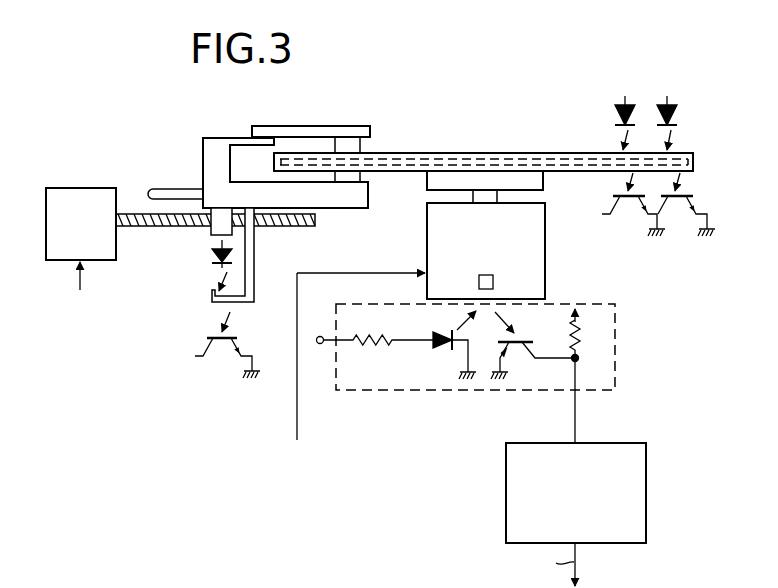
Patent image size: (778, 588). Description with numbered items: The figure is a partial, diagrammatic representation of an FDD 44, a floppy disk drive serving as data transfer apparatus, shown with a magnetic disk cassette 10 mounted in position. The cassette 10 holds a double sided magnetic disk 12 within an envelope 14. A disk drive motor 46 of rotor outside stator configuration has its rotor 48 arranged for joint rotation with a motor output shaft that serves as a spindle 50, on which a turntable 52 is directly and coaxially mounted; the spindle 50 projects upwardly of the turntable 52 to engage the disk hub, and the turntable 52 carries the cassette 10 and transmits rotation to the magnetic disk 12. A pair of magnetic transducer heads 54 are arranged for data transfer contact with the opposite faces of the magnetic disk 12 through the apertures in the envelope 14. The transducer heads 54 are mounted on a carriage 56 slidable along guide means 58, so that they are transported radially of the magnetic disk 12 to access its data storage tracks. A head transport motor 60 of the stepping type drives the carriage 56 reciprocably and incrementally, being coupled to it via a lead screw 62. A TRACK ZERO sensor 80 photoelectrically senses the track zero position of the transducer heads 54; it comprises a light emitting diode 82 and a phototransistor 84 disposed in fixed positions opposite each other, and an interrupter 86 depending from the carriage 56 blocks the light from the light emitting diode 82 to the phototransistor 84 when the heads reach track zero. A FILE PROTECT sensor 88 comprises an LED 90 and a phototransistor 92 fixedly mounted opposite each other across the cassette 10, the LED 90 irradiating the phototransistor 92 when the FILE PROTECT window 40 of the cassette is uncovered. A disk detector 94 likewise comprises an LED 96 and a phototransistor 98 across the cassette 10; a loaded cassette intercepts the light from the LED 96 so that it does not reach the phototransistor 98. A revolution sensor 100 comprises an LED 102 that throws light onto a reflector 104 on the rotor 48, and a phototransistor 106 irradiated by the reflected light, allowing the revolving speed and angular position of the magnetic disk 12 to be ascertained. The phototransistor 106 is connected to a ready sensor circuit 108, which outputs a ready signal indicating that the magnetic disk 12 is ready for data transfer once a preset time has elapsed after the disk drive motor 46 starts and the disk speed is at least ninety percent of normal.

The magnetic disk cassette 10 is at (483, 135).
The magnetic disk 12 is at (519, 158).
The envelope 14 is at (439, 152).
The FILE PROTECT window 40 is at (645, 155).
The FDD 44 is at (124, 149).
The disk drive motor 46 is at (512, 251).
The rotor 48 is at (538, 250).
The spindle 50 is at (485, 204).
The turntable 52 is at (544, 181).
The magnetic transducer heads 54 is at (353, 151).
The carriage 56 is at (352, 207).
The guide means 58 is at (167, 188).
The head transport motor 60 is at (72, 197).
The lead screw 62 is at (143, 227).
The TRACK ZERO sensor 80 is at (221, 271).
The light emitting diode 82 is at (210, 256).
The phototransistor 84 is at (212, 336).
The interrupter 86 is at (211, 297).
The FILE PROTECT sensor 88 is at (621, 93).
The LED 90 is at (613, 110).
The phototransistor 92 is at (620, 213).
The disk detector 94 is at (673, 100).
The LED 96 is at (681, 117).
The phototransistor 98 is at (672, 214).
The revolution sensor 100 is at (491, 347).
The LED 102 is at (447, 352).
The reflector 104 is at (490, 282).
The phototransistor 106 is at (528, 350).
The ready sensor circuit 108 is at (620, 446).